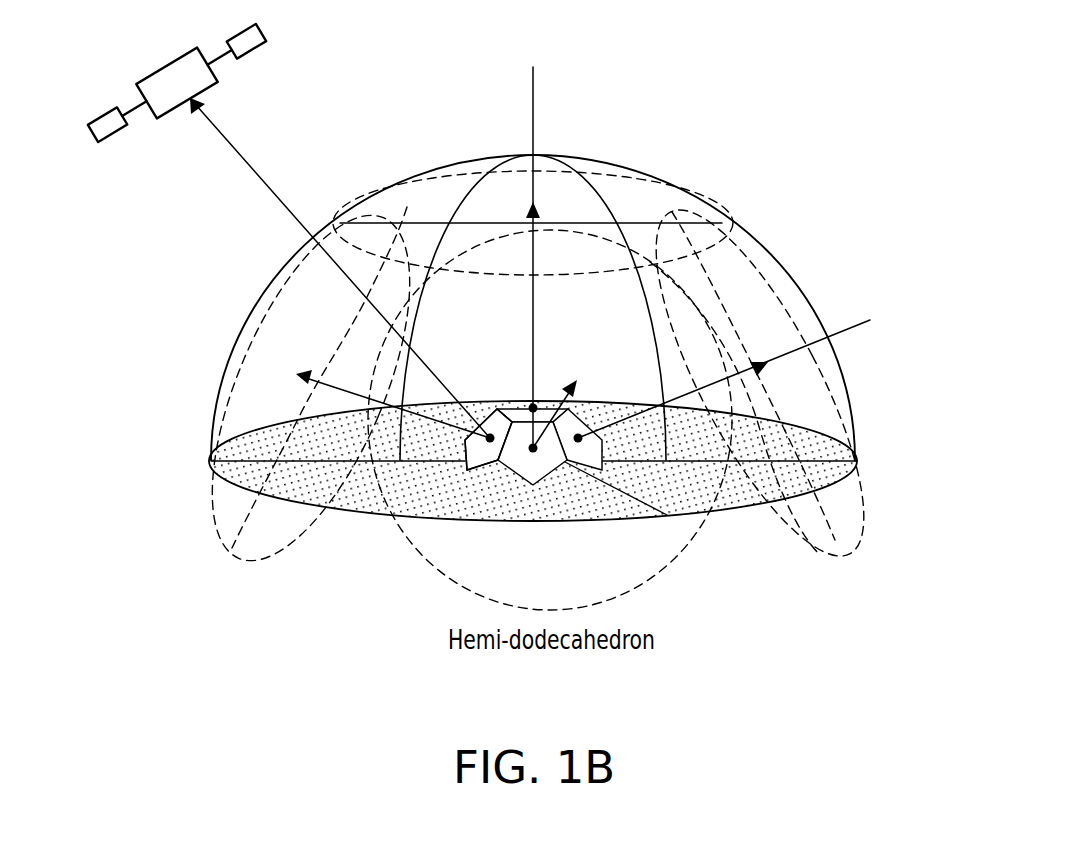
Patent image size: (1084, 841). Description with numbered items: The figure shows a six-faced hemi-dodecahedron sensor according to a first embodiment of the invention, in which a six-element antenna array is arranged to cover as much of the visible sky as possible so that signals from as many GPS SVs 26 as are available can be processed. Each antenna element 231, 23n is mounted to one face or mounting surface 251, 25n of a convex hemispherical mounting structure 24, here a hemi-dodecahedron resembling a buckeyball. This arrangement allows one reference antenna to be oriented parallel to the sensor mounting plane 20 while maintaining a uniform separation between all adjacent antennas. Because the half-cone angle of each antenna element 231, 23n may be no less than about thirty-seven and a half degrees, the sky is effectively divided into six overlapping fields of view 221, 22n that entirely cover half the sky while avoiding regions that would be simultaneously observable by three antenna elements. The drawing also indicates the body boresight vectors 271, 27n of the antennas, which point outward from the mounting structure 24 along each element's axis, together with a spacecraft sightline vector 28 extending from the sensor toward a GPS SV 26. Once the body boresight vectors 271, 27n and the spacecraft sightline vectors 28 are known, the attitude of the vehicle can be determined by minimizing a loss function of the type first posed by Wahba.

The sensor mounting plane 20 is at (825, 488).
The field of view (FOV) 22n is at (640, 170).
The field of view (FOV) 221 is at (755, 246).
The antenna element 23n is at (490, 436).
The antenna element 231 is at (533, 446).
The convex hemispherical mounting structure 24 is at (531, 494).
The mounting surface 25n is at (478, 463).
The mounting surface 251 is at (525, 465).
The GPS SV 26 is at (170, 128).
The body boresight vector 271 is at (533, 93).
The body boresight vector 27n is at (868, 318).
The spacecraft sightline vector 28 is at (240, 148).